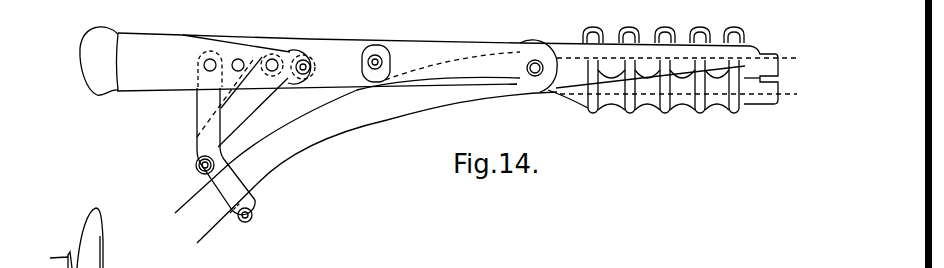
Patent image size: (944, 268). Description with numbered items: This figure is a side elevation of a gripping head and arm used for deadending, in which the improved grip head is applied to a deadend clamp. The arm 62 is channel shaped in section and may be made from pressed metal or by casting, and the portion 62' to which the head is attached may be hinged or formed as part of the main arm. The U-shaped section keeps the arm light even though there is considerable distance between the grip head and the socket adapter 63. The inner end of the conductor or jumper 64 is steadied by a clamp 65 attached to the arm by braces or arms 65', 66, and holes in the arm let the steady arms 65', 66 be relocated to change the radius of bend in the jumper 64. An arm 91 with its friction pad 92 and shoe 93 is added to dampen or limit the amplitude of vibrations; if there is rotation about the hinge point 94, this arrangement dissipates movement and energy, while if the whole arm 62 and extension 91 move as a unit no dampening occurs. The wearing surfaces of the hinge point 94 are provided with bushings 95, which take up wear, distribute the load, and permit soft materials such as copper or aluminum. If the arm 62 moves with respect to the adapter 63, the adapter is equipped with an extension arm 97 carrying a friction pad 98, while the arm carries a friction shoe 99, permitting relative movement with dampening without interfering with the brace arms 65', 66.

The arm 62 is at (318, 90).
The portion to which the head is attached 62' is at (664, 67).
The socket adapter 63 is at (128, 91).
The conductor or jumper 64 is at (307, 143).
The clamp 65 is at (234, 221).
The brace or steady arm 65' is at (196, 86).
The brace or steady arm 66 is at (235, 113).
The arm 91 is at (447, 50).
The friction pad 92 is at (368, 52).
The shoe 93 is at (380, 56).
The hinge point 94 is at (531, 74).
The bushings 95 is at (536, 78).
The extension arm 97 is at (252, 53).
The friction pad 98 is at (298, 51).
The friction shoe 99 is at (309, 58).